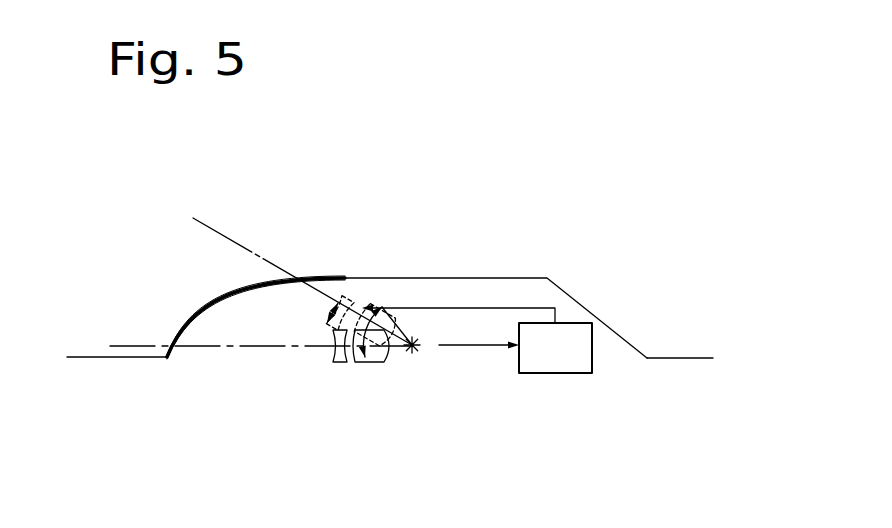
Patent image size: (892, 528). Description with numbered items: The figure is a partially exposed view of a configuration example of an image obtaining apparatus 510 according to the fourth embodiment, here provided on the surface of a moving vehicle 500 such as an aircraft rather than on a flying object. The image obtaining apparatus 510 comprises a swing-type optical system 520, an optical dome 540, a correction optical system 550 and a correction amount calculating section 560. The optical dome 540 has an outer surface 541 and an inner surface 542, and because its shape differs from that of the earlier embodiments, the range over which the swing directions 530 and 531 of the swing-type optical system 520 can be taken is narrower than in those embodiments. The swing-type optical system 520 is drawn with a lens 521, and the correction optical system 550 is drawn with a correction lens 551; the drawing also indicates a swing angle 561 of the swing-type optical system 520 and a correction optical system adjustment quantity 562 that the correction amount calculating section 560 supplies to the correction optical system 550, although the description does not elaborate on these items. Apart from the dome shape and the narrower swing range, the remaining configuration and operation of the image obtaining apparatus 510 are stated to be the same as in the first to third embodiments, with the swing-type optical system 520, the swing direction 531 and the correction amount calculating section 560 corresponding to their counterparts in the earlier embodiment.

The moving vehicle 500 is at (123, 359).
The image obtaining apparatus 510 is at (330, 195).
The swing-type optical system 520 is at (521, 267).
The lens of swing-type optical system 521 is at (392, 330).
The swing direction 530 is at (113, 347).
The swing direction 531 is at (222, 234).
The optical dome 540 is at (221, 291).
The outer surface 541 is at (205, 316).
The inner surface 542 is at (256, 315).
The correction optical system 550 is at (328, 364).
The correction lens 551 is at (349, 297).
The correction amount calculating section 560 is at (577, 373).
The swing angle 561 is at (456, 346).
The correction optical system adjustment quantity 562 is at (543, 280).